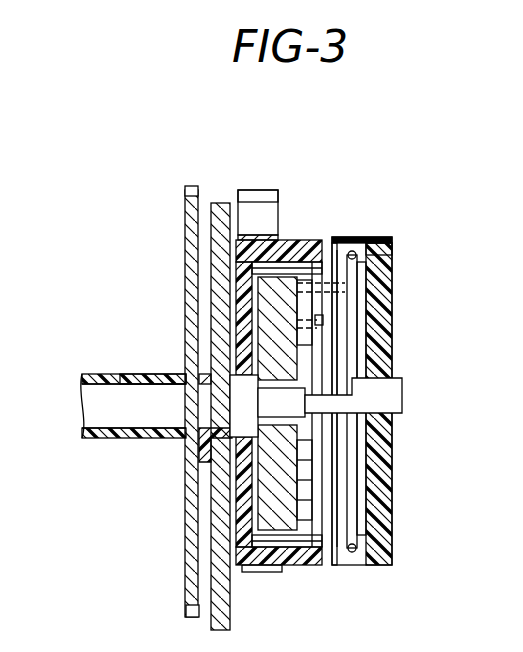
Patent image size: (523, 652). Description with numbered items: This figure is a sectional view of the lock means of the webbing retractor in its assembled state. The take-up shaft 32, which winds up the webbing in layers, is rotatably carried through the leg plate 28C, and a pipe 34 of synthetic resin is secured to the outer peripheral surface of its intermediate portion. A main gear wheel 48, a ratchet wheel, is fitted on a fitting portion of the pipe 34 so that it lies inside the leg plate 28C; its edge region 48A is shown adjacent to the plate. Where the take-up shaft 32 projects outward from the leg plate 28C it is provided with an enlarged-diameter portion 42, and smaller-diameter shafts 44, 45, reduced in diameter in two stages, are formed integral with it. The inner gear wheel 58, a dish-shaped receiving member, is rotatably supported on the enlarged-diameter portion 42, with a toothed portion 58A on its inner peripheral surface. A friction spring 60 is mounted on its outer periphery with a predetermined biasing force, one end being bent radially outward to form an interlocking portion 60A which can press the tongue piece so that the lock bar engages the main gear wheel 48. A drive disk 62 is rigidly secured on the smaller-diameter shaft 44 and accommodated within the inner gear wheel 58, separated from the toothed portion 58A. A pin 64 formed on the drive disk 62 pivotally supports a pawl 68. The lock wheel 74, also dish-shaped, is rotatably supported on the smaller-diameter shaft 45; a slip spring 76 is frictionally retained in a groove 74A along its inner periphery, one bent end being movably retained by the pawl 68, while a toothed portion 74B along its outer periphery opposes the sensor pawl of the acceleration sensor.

The leg plate 28C is at (218, 203).
The take-up shaft 32 is at (80, 400).
The pipe 34 is at (146, 374).
The enlarged-diameter portion 42 is at (253, 452).
The smaller-diameter shaft 44 is at (308, 388).
The smaller-diameter shaft 45 is at (380, 406).
The main gear wheel 48 is at (185, 250).
The plate edge 48A is at (190, 186).
The inner gear wheel 58 is at (318, 258).
The toothed portion 58A is at (330, 545).
The friction spring 60 is at (284, 214).
The interlocking portion 60A is at (262, 196).
The drive disk 62 is at (313, 510).
The pin 64 is at (322, 321).
The pawl 68 is at (340, 262).
The lock wheel 74 is at (400, 254).
The groove 74A is at (370, 242).
The toothed portion 74B is at (386, 235).
The slip spring 76 is at (313, 283).